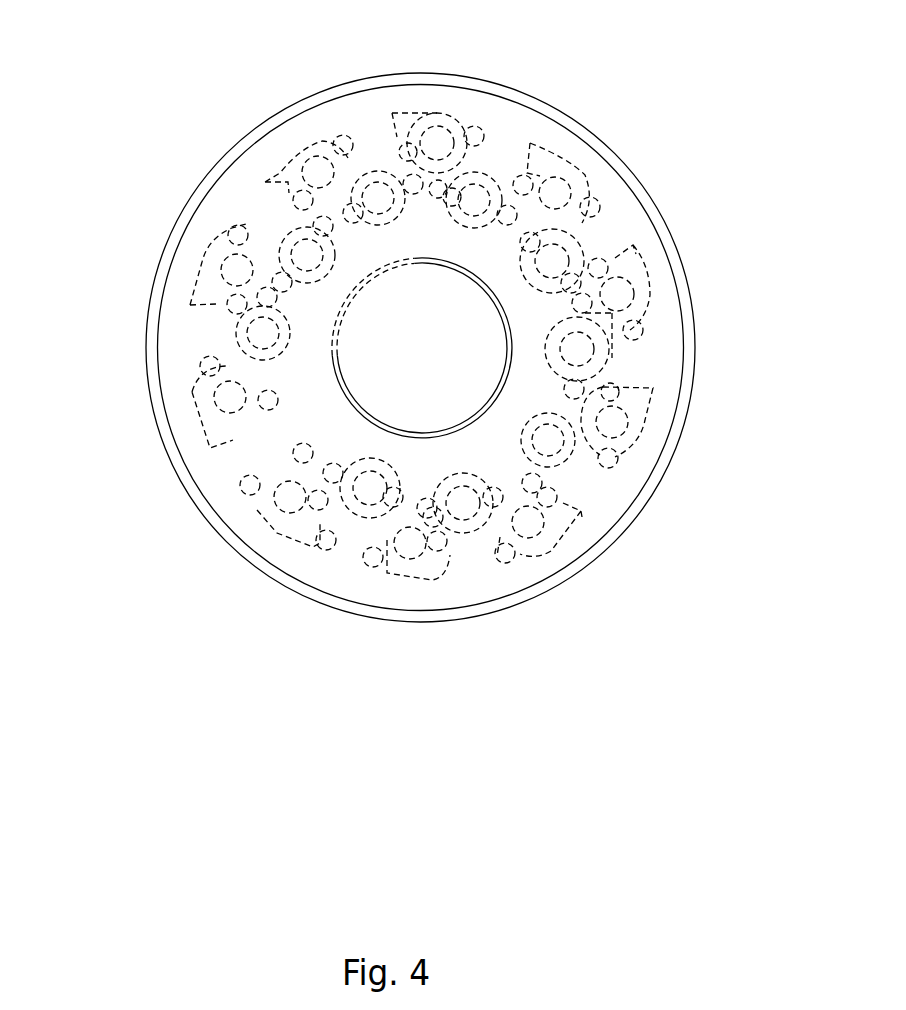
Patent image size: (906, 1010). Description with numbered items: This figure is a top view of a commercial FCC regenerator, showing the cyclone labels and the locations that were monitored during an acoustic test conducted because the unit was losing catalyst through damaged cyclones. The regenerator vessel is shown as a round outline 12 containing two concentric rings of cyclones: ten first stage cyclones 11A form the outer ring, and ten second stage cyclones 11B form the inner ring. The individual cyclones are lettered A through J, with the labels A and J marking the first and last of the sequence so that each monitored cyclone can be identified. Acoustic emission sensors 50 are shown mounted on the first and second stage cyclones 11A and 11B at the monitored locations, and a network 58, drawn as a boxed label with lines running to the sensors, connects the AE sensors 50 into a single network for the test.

The housing ring 12 is at (150, 333).
The AE sensors 50 is at (452, 184).
The first stage cyclones 11A is at (637, 260).
The second stage cyclones 11B is at (610, 360).
The cyclone label A is at (297, 245).
The cyclone label J is at (260, 347).
The network 58 is at (323, 460).